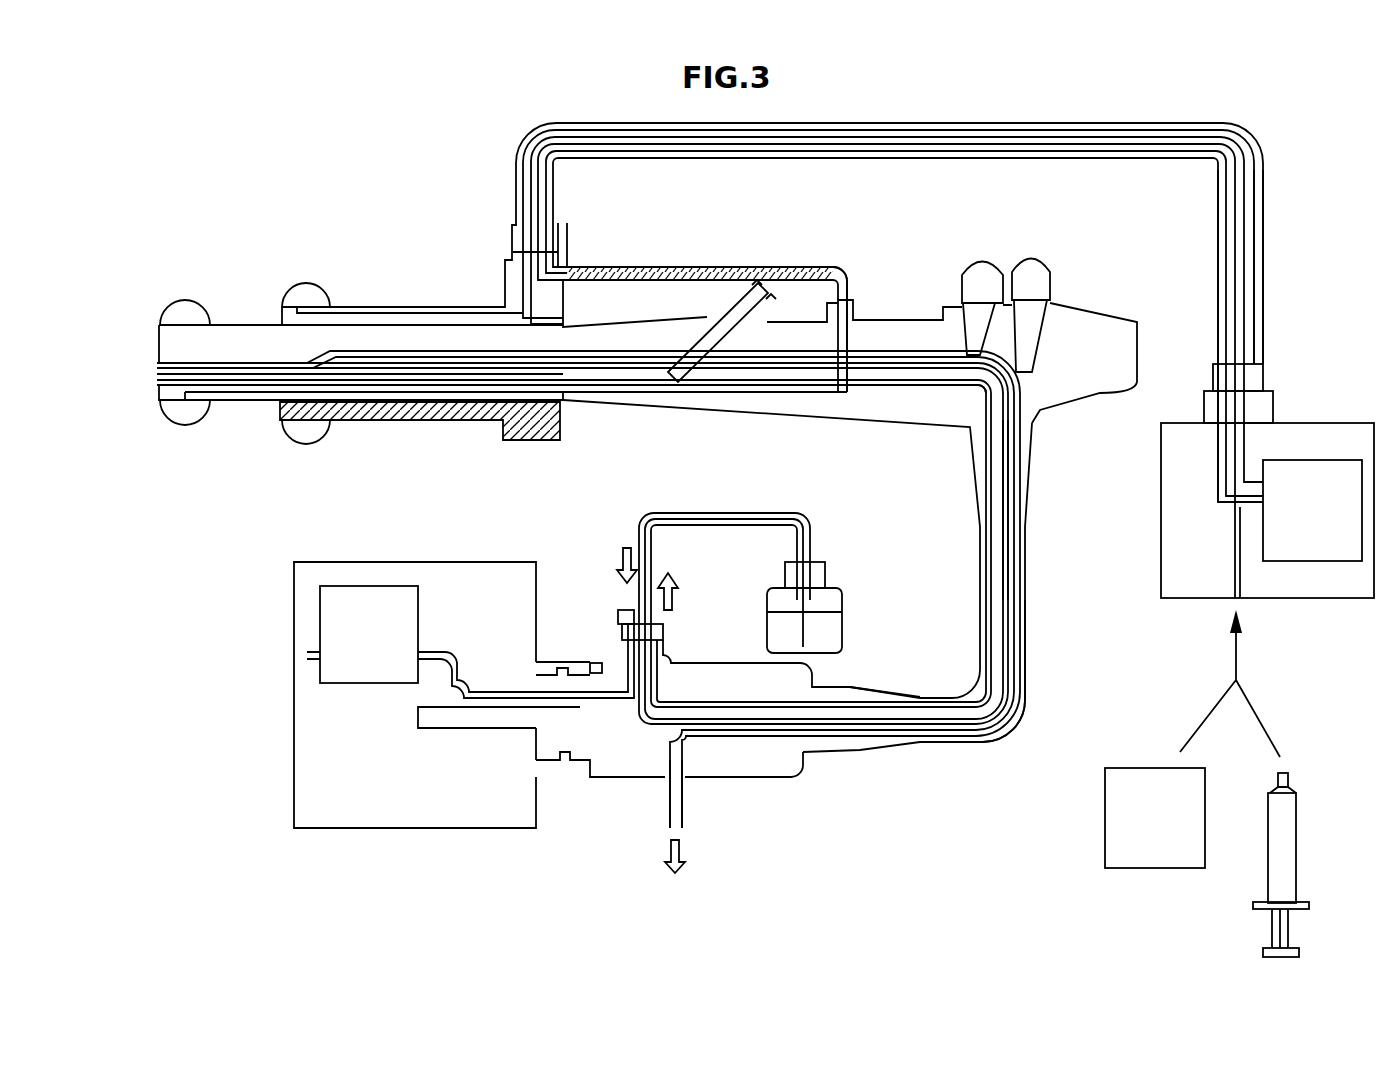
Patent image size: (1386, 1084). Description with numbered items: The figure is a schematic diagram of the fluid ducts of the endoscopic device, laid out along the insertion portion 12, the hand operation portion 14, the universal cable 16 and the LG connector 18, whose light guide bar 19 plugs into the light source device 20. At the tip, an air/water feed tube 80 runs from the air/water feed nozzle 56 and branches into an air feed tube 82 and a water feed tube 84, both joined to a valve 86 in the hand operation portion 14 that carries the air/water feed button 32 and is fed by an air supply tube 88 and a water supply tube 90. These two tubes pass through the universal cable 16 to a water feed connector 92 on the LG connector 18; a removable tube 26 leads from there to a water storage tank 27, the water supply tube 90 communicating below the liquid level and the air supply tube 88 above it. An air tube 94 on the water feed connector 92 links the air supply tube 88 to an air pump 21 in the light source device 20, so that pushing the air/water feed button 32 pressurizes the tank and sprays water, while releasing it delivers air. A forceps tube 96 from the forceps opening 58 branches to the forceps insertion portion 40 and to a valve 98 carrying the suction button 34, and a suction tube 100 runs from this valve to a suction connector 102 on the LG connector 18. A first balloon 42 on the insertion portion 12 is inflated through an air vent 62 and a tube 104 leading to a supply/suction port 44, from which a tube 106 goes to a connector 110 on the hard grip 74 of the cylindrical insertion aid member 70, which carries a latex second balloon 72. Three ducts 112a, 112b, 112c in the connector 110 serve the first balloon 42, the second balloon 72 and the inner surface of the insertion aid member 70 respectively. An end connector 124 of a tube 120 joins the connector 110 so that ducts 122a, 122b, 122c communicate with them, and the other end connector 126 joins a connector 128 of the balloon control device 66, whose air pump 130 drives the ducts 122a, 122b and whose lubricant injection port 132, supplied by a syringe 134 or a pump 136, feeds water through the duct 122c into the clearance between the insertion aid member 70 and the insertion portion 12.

The insertion portion 12 is at (238, 323).
The hand operation portion 14 is at (872, 427).
The universal cable 16 is at (1026, 656).
The LG connector 18 is at (788, 778).
The light guide bar 19 is at (492, 730).
The light source device 20 is at (318, 828).
The air pump 21 is at (372, 586).
The tube 26 is at (740, 526).
The water storage tank 27 is at (843, 622).
The air/water feed button 32 is at (985, 259).
The suction button 34 is at (1032, 262).
The forceps insertion portion 40 is at (770, 293).
The first balloon 42 is at (185, 300).
The supply/suction port 44 is at (850, 300).
The air/water feed nozzle 56 is at (157, 366).
The forceps opening 58 is at (157, 380).
The air vent 62 is at (185, 424).
The balloon control device 66 is at (1161, 528).
The insertion aid member 70 is at (378, 300).
The second balloon 72 is at (307, 283).
The grip 74 is at (505, 440).
The air/water feed tube 80 is at (240, 368).
The air feed tube 82 is at (717, 368).
The water feed tube 84 is at (772, 353).
The valve 86 is at (958, 296).
The air supply tube 88 is at (986, 448).
The water supply tube 90 is at (1000, 500).
The water feed connector 92 is at (664, 630).
The air tube 94 is at (600, 685).
The forceps tube 96 is at (647, 380).
The valve 98 is at (1058, 322).
The suction tube 100 is at (1014, 442).
The suction connector 102 is at (666, 803).
The tube 104 is at (275, 402).
The tube 106 is at (822, 267).
The connector 110 is at (512, 253).
The duct 112a is at (580, 276).
The duct 112b is at (508, 263).
The duct 112c is at (540, 293).
The tube 120 is at (913, 162).
The duct 122a is at (1218, 260).
The duct 122b is at (1222, 262).
The duct 122c is at (1215, 190).
The end connector 124 is at (513, 225).
The end connector 126 is at (1212, 378).
The connector 128 is at (1204, 405).
The air pump 130 is at (1320, 460).
The lubricant injection port 132 is at (1232, 600).
The syringe 134 is at (1296, 820).
The pump 136 is at (1105, 798).